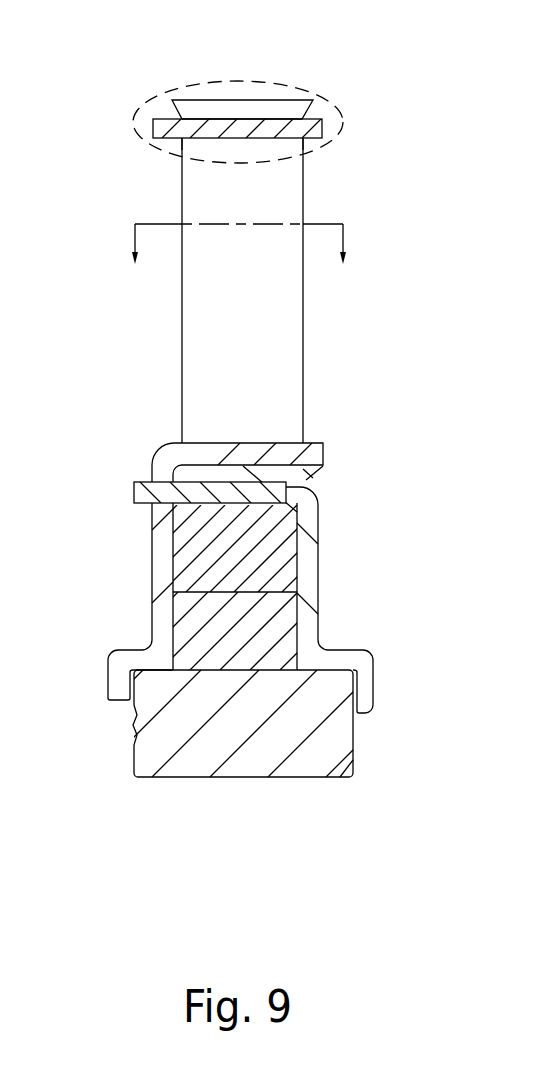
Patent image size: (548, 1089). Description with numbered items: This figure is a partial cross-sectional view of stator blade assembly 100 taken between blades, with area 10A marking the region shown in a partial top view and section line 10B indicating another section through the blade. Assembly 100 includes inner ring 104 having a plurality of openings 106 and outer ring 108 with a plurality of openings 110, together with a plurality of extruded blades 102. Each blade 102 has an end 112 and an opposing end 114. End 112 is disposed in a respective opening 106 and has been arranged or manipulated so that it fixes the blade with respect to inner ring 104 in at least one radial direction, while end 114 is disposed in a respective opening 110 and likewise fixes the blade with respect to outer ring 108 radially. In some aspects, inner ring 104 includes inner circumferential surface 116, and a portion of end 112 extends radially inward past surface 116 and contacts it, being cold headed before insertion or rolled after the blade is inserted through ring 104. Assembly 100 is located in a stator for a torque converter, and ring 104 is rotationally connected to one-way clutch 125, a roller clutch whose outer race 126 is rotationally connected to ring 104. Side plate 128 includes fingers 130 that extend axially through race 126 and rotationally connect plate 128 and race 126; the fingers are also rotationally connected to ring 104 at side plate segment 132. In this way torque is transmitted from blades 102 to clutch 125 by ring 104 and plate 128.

The stator blade assembly 100 is at (262, 234).
The area 10A is at (333, 110).
The section line 10B is at (247, 260).
The extruded blade 102 is at (202, 312).
The inner ring 104 is at (325, 452).
The opening 106 is at (245, 549).
The outer ring 108 is at (322, 128).
The opening 110 is at (193, 146).
The end 112 is at (318, 489).
The opposing end 114 is at (230, 112).
The inner circumferential surface 116 is at (293, 507).
The one-way clutch 125 is at (224, 581).
The outer race 126 is at (195, 528).
The side plate 128 is at (332, 602).
The fingers 130 is at (143, 494).
The side plate segment 132 is at (160, 611).